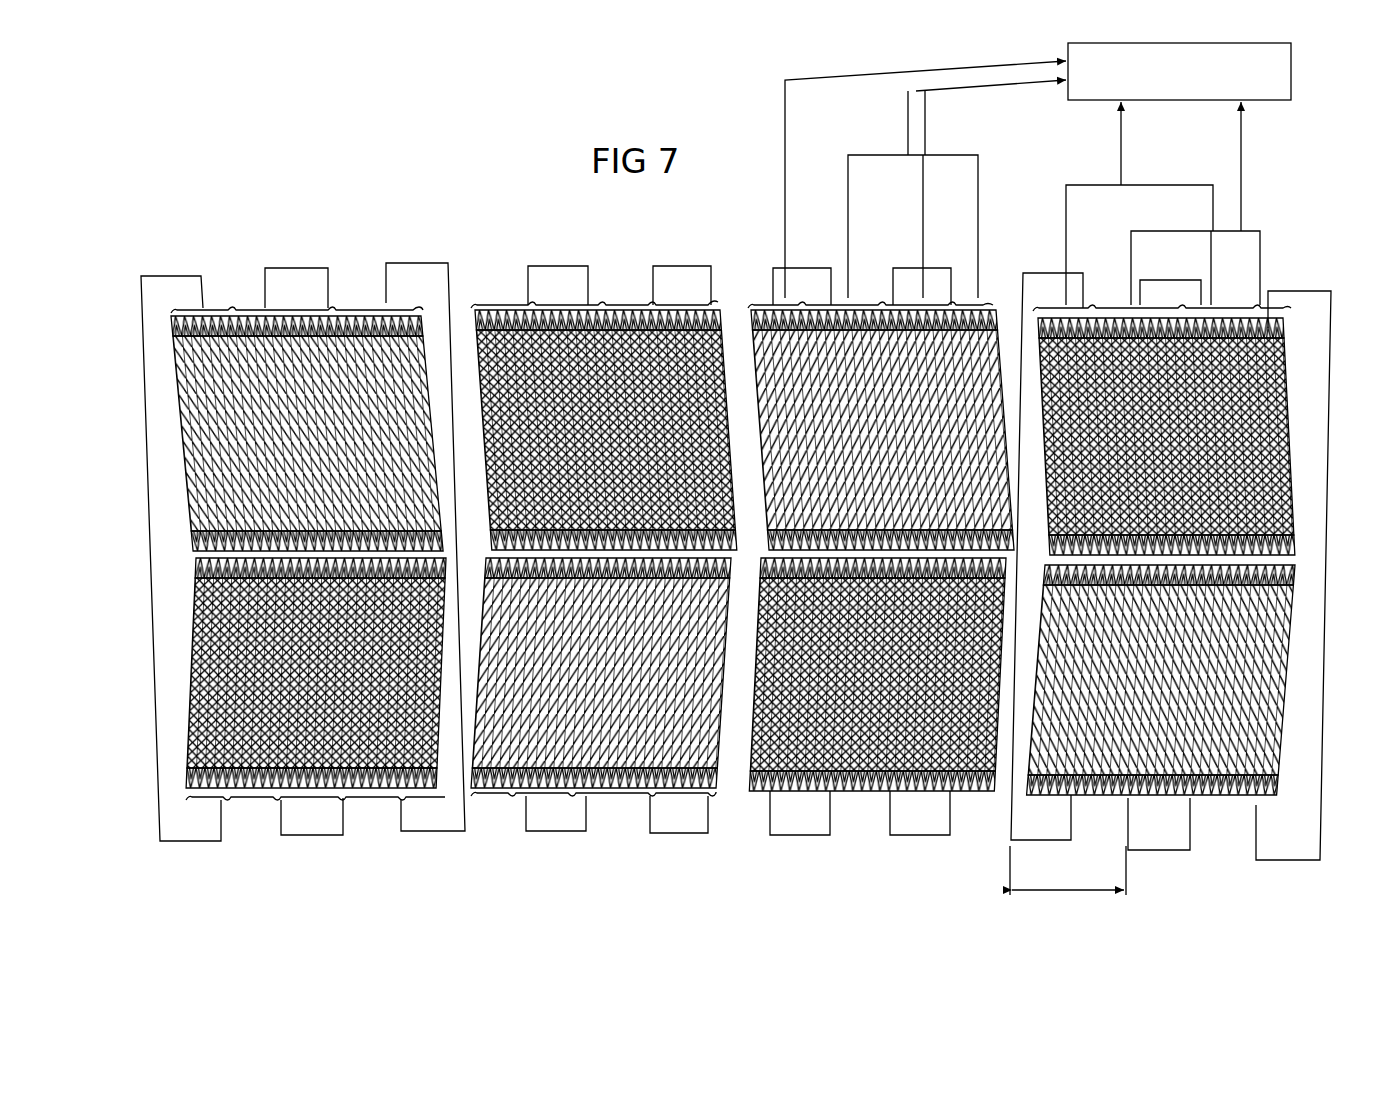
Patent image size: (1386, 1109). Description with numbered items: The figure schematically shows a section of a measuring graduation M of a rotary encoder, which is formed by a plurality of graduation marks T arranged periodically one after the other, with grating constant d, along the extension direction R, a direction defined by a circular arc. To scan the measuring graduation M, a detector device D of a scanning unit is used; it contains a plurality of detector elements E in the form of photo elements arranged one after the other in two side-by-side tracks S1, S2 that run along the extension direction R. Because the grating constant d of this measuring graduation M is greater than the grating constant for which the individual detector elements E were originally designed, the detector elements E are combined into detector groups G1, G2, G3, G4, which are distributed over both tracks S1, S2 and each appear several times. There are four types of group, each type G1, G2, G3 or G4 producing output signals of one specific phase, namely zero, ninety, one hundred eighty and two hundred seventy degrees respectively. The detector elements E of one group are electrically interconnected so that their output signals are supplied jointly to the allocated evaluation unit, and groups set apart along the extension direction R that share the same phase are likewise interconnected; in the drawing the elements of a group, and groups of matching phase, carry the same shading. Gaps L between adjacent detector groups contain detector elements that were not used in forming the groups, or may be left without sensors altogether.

The detector group G1 is at (195, 298).
The detector group G2 is at (500, 290).
The detector group G3 is at (258, 303).
The detector group G4 is at (572, 290).
The detector element E is at (748, 290).
The detector device D is at (851, 282).
The graduation mark T is at (920, 272).
The measuring graduation M is at (1286, 270).
The track S1 is at (1285, 410).
The track S2 is at (1280, 700).
The extension direction R is at (1194, 566).
The gap L is at (455, 700).
The grating constant d is at (1068, 870).